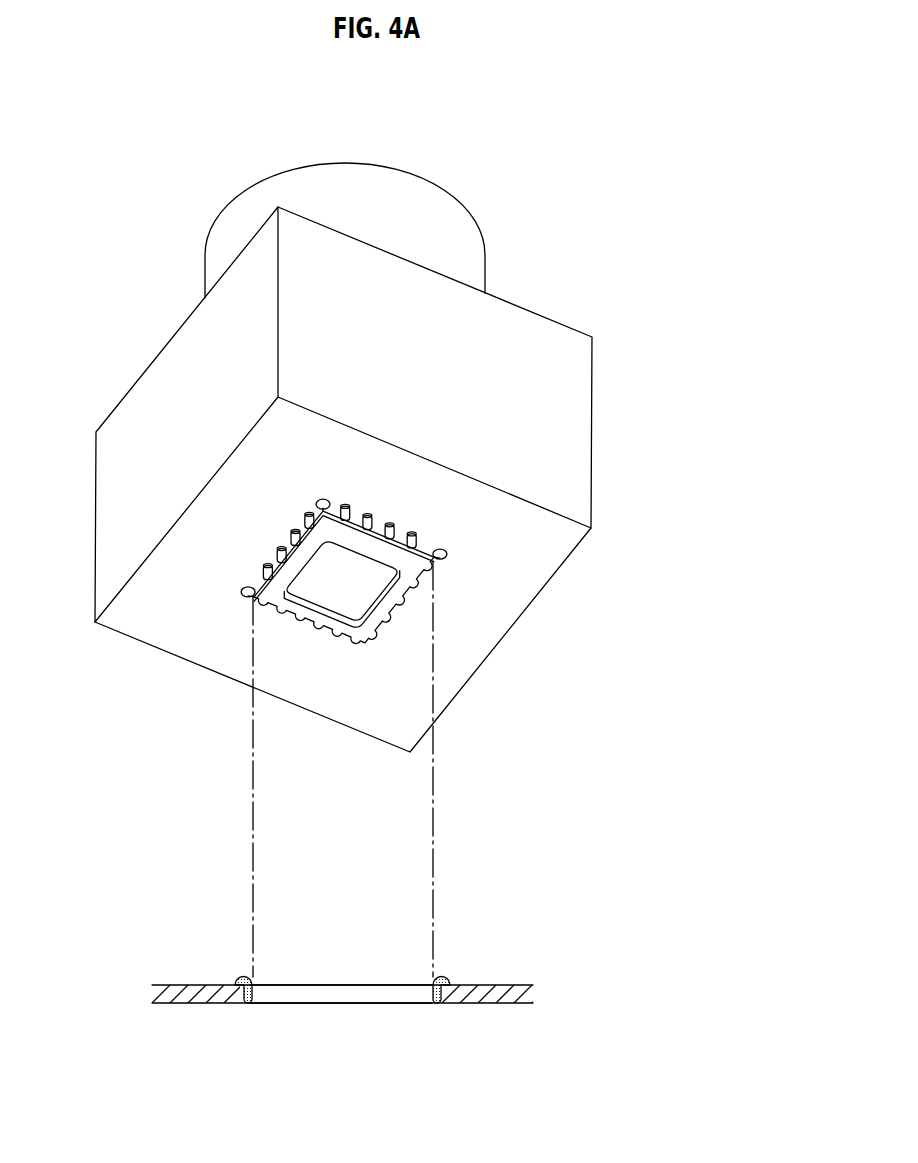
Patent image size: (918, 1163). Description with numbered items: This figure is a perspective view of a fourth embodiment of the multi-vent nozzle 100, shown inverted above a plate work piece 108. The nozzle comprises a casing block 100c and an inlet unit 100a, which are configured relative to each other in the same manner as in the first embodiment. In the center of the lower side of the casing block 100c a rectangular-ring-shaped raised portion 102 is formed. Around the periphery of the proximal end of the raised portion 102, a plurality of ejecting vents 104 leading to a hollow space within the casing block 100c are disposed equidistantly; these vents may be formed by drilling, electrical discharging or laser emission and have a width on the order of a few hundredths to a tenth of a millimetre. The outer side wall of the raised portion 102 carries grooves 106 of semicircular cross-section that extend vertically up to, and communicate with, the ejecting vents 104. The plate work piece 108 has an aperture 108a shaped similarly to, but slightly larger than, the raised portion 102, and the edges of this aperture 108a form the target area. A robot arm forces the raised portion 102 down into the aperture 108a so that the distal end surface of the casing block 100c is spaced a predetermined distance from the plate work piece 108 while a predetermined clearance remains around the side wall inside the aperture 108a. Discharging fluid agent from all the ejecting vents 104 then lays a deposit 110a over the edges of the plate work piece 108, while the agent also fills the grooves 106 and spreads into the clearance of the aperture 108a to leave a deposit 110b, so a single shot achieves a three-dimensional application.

The multi-vent nozzle 100 is at (635, 414).
The inlet unit 100a is at (463, 258).
The casing block 100c is at (113, 523).
The raised portion 102 is at (331, 678).
The ejecting vents 104 is at (457, 562).
The grooves 106 is at (423, 578).
The plate work piece 108 is at (498, 985).
The aperture 108a is at (377, 1005).
The deposit 110a is at (442, 978).
The deposit 110b is at (430, 995).